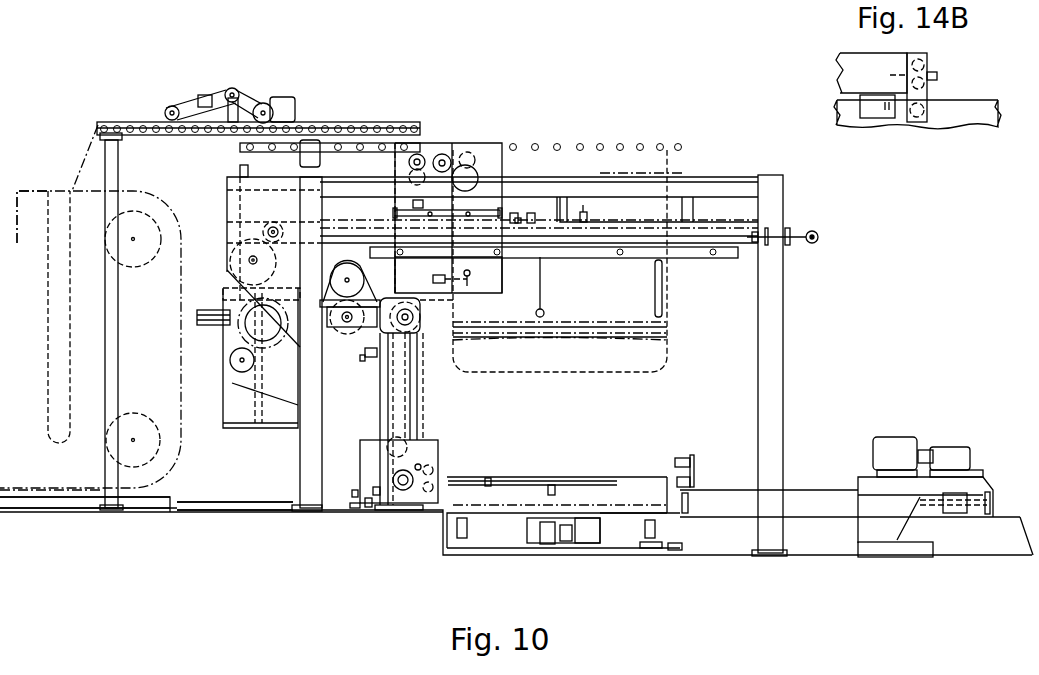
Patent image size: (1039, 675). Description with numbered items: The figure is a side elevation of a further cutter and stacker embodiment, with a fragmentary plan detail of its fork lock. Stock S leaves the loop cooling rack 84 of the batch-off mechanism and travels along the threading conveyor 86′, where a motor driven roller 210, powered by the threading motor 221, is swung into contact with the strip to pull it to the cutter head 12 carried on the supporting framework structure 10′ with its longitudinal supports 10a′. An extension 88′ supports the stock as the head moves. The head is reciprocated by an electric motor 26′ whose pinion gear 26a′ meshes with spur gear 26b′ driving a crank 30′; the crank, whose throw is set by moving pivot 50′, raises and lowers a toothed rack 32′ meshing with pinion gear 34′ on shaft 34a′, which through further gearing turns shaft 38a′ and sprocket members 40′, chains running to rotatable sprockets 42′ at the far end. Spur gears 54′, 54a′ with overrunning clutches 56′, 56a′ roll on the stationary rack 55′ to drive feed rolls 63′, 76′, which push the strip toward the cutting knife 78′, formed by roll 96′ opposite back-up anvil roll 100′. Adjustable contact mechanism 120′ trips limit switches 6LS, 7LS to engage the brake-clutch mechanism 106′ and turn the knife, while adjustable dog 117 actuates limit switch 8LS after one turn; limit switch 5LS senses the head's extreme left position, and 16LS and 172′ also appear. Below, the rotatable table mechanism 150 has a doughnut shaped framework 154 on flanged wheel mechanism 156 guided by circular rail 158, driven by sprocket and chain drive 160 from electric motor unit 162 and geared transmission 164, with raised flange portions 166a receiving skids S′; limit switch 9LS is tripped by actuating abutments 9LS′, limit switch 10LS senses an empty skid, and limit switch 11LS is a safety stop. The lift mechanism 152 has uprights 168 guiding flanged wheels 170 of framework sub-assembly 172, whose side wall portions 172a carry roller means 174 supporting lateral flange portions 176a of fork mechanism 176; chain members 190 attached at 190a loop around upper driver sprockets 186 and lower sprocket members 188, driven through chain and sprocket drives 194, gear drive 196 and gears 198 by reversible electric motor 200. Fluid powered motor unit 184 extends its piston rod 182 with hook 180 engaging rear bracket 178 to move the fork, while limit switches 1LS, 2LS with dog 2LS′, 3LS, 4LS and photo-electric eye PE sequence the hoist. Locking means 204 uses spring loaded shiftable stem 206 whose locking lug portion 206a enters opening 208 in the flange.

In FIG. 10, the loop cooling rack of a batch-off mechanism 84 is at (28, 186).
In FIG. 10, the stock S is at (83, 158).
In FIG. 10, the threading conveyor 86′ is at (123, 121).
In FIG. 10, the motor driven roller 210 is at (170, 107).
In FIG. 10, the threading motor 221 is at (287, 98).
In FIG. 10, the extension 88′ is at (240, 148).
In FIG. 10, the toothed rack 32′ is at (238, 168).
In FIG. 10, the shaft 38a′ is at (240, 222).
In FIG. 10, the sprocket members 40′ is at (275, 227).
In FIG. 10, the pinion gear 34′ is at (233, 244).
In FIG. 10, the shaft 34a′ is at (248, 260).
In FIG. 10, the crank 30′ is at (230, 300).
In FIG. 10, the pivot 50′ is at (230, 328).
In FIG. 10, the electric motor 26′ is at (230, 352).
In FIG. 10, the pinion gear 26a′ is at (232, 364).
In FIG. 10, the spur gear 26b′ is at (228, 390).
In FIG. 10, the fluid powered motor unit 184 is at (68, 503).
In FIG. 10, the piston rod 182 is at (222, 503).
In FIG. 10, the brake-clutch mechanism 106′ is at (302, 483).
In FIG. 10, the supporting framework structure 10′ is at (787, 199).
In FIG. 10, the longitudinal supports 10a′ is at (718, 227).
In FIG. 10, the stationary rack 55′ is at (683, 176).
In FIG. 10, the rotatable sprockets 42′ is at (820, 237).
In FIG. 10, the multi-speed reversible electric motor 200 is at (344, 260).
In FIG. 10, the gears 198 is at (358, 284).
In FIG. 10, the gear drive 196 is at (340, 326).
In FIG. 10, the chain and sprocket drives 194 is at (365, 353).
In FIG. 10, the limit switch 4LS is at (362, 361).
In FIG. 10, the upper driver sprockets 186 is at (423, 336).
In FIG. 10, the uprights 168 is at (380, 403).
In FIG. 10, the lift mechanism 152 is at (424, 421).
In FIG. 10, the chain member 190 is at (422, 403).
In FIG. 10, the framework sub-assembly 172 is at (440, 442).
In FIG. 14B, the framework sub-assembly 172 is at (837, 58).
In FIG. 10, the flanged wheels 170 is at (382, 434).
In FIG. 10, the chain attachment 190a is at (422, 467).
In FIG. 10, the rear bracket 178 is at (353, 493).
In FIG. 10, the limit switch 3LS is at (375, 488).
In FIG. 10, the limit switch 2LS is at (368, 507).
In FIG. 10, the lower sprocket members 188 is at (402, 510).
In FIG. 10, the hook 180 is at (355, 508).
In FIG. 10, the overrunning clutch 56′ is at (395, 178).
In FIG. 10, the spur gear 54′ is at (420, 156).
In FIG. 10, the overrunning clutch 56a′ is at (445, 158).
In FIG. 10, the spur gear 54a′ is at (472, 158).
In FIG. 10, the feed roll 76′ is at (470, 172).
In FIG. 10, the adjustable contact mechanism 120′ is at (478, 208).
In FIG. 10, the feed roll 63′ is at (397, 200).
In FIG. 10, the limit switch 5LS is at (395, 213).
In FIG. 10, the limit switch 6LS is at (531, 213).
In FIG. 10, the limit switch 7LS is at (588, 214).
In FIG. 10, the limit switch 16 16LS is at (518, 223).
In FIG. 10, the cylindrical roll 96′ is at (495, 283).
In FIG. 10, the back-up anvil roll 100′ is at (433, 277).
In FIG. 10, the limit switch 8LS is at (433, 281).
In FIG. 10, the adjustable dog 117 is at (470, 281).
In FIG. 10, the cutting knife 78′ is at (478, 284).
In FIG. 10, the member 172′ is at (436, 320).
In FIG. 10, the photo-electric eye PE is at (545, 313).
In FIG. 10, the cutter head 12 is at (560, 311).
In FIG. 10, the fork mechanism 176 is at (530, 350).
In FIG. 14B, the fork mechanism 176 is at (990, 133).
In FIG. 10, the skid S′ is at (651, 372).
In FIG. 10, the limit switch 1LS is at (490, 478).
In FIG. 10, the dog 2LS′ is at (553, 485).
In FIG. 10, the limit switch 11LS is at (685, 457).
In FIG. 10, the limit switch 10LS is at (690, 477).
In FIG. 10, the raised flange portions 166a is at (490, 513).
In FIG. 10, the circular rail 158 is at (553, 548).
In FIG. 10, the flanged wheel mechanism 156 is at (572, 545).
In FIG. 10, the doughnut shaped framework 154 is at (640, 542).
In FIG. 10, the actuating abutment 9LS′ is at (645, 548).
In FIG. 10, the limit switch 9LS is at (680, 550).
In FIG. 10, the rotatable table mechanism 150 is at (707, 490).
In FIG. 10, the electric motor unit 162 is at (900, 442).
In FIG. 10, the geared transmission 164 is at (967, 452).
In FIG. 10, the sprocket and chain drive 160 is at (978, 498).
In FIG. 14B, the side wall portions 172a is at (900, 58).
In FIG. 14B, the spring loaded shiftable stem 206 is at (928, 65).
In FIG. 14B, the locking means 204 is at (933, 85).
In FIG. 14B, the lateral flange portions 176a is at (967, 103).
In FIG. 14B, the roller means 174 is at (875, 115).
In FIG. 14B, the locking lug portion 206a is at (914, 123).
In FIG. 14B, the opening 208 is at (932, 125).